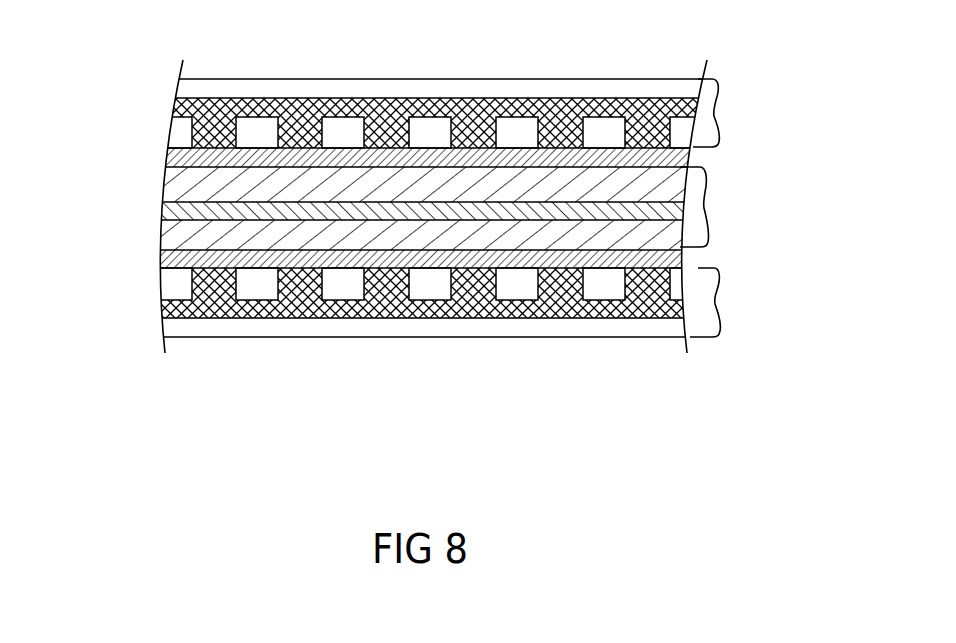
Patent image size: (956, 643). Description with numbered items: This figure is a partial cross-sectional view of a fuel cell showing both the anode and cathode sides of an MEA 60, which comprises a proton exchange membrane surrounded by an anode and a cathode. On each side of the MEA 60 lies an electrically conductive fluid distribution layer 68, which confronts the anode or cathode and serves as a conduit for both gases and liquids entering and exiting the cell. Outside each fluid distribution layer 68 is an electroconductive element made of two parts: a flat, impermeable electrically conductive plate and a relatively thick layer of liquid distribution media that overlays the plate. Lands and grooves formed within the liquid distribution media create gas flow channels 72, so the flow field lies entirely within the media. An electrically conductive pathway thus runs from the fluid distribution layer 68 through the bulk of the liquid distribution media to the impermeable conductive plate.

The MEA 60 is at (435, 208).
The electrically conductive fluid distribution layer 68 is at (435, 208).
The gas flow channels 72 is at (431, 208).